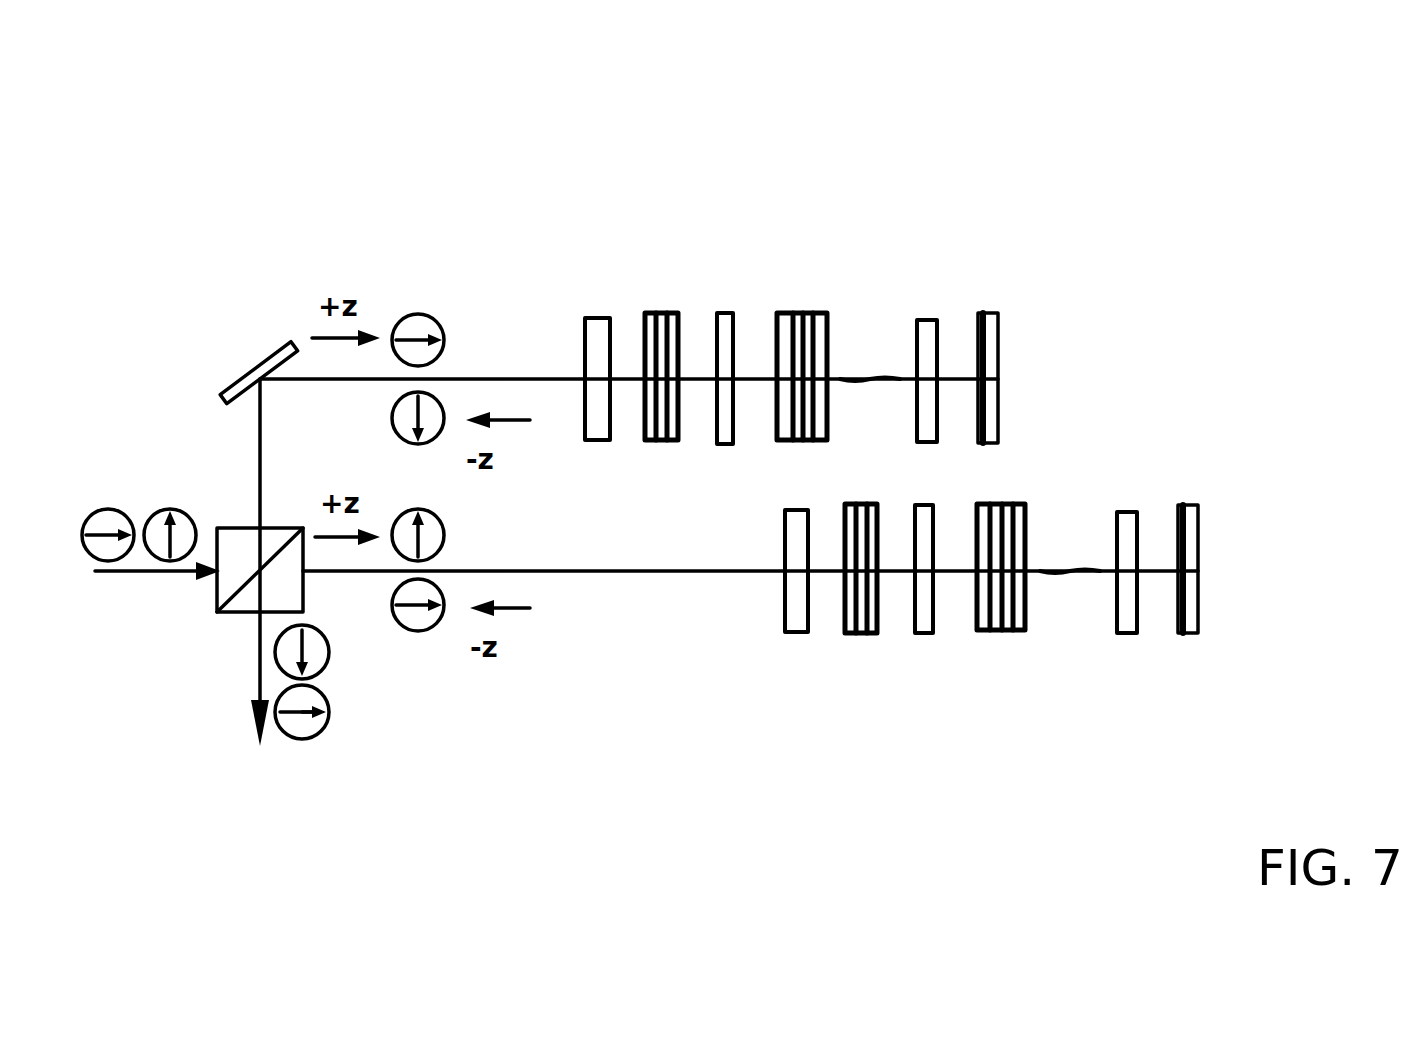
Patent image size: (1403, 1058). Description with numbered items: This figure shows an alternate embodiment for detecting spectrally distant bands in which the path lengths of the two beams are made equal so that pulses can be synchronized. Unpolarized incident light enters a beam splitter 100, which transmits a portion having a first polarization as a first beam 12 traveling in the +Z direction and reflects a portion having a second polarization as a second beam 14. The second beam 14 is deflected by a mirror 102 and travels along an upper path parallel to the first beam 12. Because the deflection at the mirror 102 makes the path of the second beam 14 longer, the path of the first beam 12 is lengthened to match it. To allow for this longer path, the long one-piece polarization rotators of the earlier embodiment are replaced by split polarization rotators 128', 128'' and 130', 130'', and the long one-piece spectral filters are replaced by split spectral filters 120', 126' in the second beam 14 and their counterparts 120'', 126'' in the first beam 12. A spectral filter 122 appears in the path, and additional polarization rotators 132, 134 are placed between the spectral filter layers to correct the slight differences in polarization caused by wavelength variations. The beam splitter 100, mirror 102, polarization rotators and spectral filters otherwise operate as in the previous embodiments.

The first beam 12 is at (382, 569).
The second beam 14 is at (345, 373).
The beam splitter 100 is at (222, 524).
The mirror 102 is at (247, 363).
The spectral filter 120' is at (720, 276).
The spectral filter 120'' is at (866, 706).
The spectral filter 122 is at (813, 313).
The spectral filter 126' is at (1049, 313).
The spectral filter 126'' is at (1262, 598).
The polarization rotator 128' is at (640, 294).
The polarization rotator 128'' is at (744, 647).
The polarization rotator 130' is at (796, 275).
The polarization rotator 130'' is at (973, 706).
The polarization rotator 132 is at (1127, 633).
The polarization rotator 134 is at (923, 318).